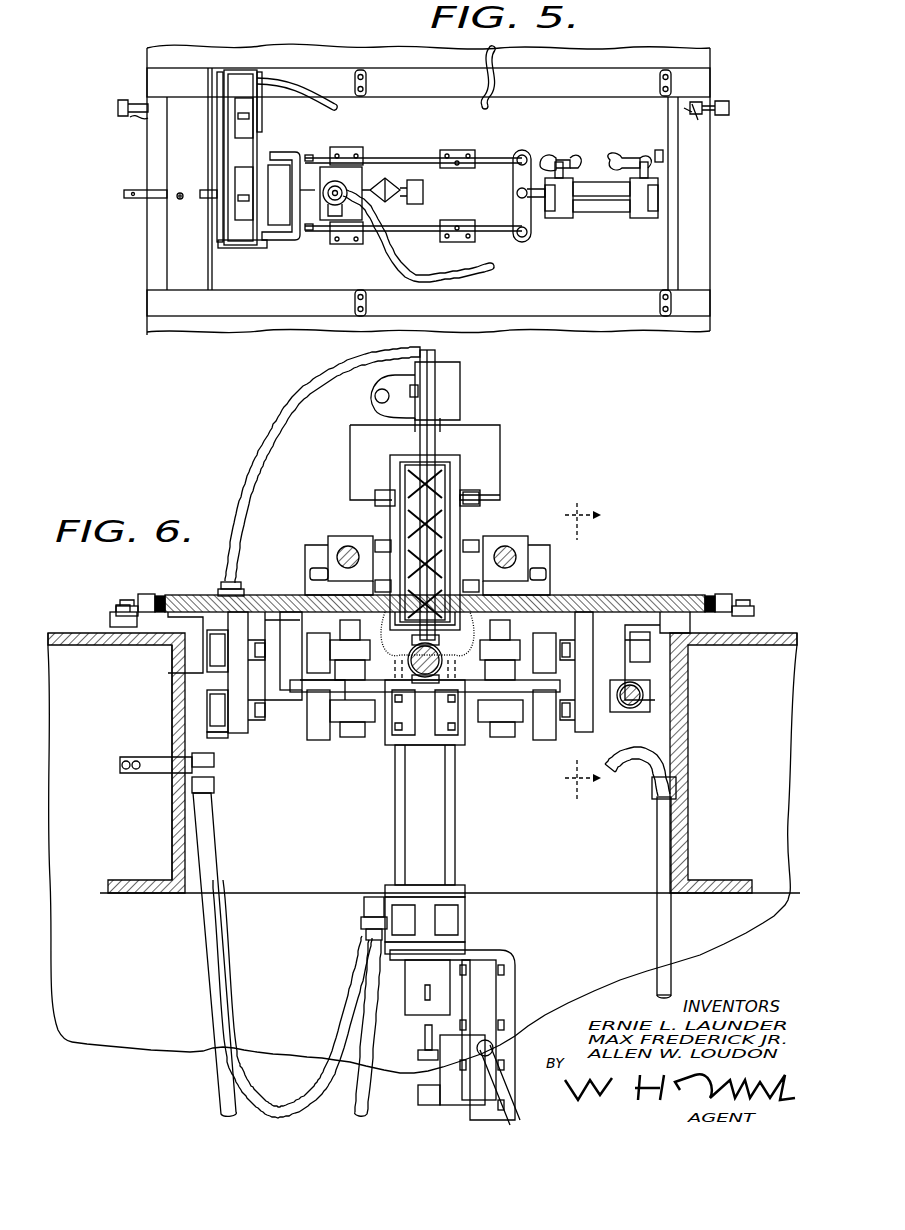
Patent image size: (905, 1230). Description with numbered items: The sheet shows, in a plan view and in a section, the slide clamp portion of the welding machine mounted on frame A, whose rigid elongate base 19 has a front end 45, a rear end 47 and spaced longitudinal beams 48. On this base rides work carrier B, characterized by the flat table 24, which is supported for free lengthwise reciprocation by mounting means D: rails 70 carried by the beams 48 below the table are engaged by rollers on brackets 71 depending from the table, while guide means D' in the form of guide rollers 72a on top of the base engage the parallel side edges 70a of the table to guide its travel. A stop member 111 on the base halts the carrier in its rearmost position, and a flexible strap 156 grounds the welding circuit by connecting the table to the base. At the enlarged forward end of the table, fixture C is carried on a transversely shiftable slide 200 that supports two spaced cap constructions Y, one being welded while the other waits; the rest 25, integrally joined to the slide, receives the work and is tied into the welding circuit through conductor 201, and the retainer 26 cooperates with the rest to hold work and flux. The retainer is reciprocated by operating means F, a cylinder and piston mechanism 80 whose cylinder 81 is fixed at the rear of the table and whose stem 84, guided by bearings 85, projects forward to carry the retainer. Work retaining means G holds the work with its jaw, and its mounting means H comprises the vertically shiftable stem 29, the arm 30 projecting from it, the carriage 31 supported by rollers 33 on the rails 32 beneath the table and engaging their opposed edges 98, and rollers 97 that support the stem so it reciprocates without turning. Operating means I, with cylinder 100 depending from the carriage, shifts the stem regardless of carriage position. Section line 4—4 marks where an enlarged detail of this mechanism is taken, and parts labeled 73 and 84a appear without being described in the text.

In FIG. 5, the base 19 is at (172, 330).
In FIG. 6, the base 19 is at (78, 633).
In FIG. 5, the table 24 is at (628, 263).
In FIG. 6, the table 24 is at (635, 596).
In FIG. 5, the rest 25 is at (222, 205).
In FIG. 5, the retainer 26 is at (292, 158).
In FIG. 6, the stem 29 is at (418, 436).
In FIG. 6, the arm 30 is at (462, 385).
In FIG. 6, the carriage 31 is at (462, 522).
In FIG. 6, the rails 32 is at (295, 700).
In FIG. 6, the rollers 33 is at (312, 745).
In FIG. 5, the front end 45 is at (147, 242).
In FIG. 5, the rear end 47 is at (710, 240).
In FIG. 6, the longitudinal beams 48 is at (172, 700).
In FIG. 6, the rails 70 is at (195, 672).
In FIG. 5, the side edges 70a is at (552, 290).
In FIG. 6, the side edges 70a is at (698, 595).
In FIG. 6, the brackets 71 is at (236, 670).
In FIG. 5, the guide rollers 72a is at (672, 306).
In FIG. 6, the guide rollers 72a is at (146, 598).
In FIG. 6, the bolt 73 is at (214, 738).
In FIG. 5, the cylinder and piston mechanism 80 is at (612, 205).
In FIG. 5, the cylinder 81 is at (588, 200).
In FIG. 5, the stem 84 is at (500, 158).
In FIG. 6, the clamp block 84a is at (508, 548).
In FIG. 6, the bearings 85 is at (335, 540).
In FIG. 6, the rollers 97 is at (412, 482).
In FIG. 6, the edges 98 is at (348, 740).
In FIG. 6, the cylinder 100 is at (458, 850).
In FIG. 5, the stop member 111 is at (715, 112).
In FIG. 5, the strap 156 is at (500, 80).
In FIG. 5, the slide 200 is at (248, 73).
In FIG. 5, the conductor 201 is at (300, 95).
In FIG. 6, the section line 4— 4 is at (576, 648).
In FIG. 5, the frame A is at (633, 60).
In FIG. 6, the frame A is at (778, 633).
In FIG. 5, the work carrier B is at (185, 135).
In FIG. 6, the work carrier B is at (592, 595).
In FIG. 5, the fixture C is at (246, 247).
In FIG. 6, the mounting means D is at (426, 681).
In FIG. 5, the guide means D' is at (561, 185).
In FIG. 6, the guide means D' is at (445, 570).
In FIG. 5, the operating means F is at (586, 178).
In FIG. 6, the operating means F is at (345, 548).
In FIG. 5, the work retaining means G is at (348, 185).
In FIG. 6, the work retaining means G is at (502, 432).
In FIG. 5, the mounting means H is at (412, 180).
In FIG. 6, the mounting means H is at (462, 465).
In FIG. 6, the operating means I is at (468, 810).
In FIG. 5, the cap constructions Y is at (254, 124).